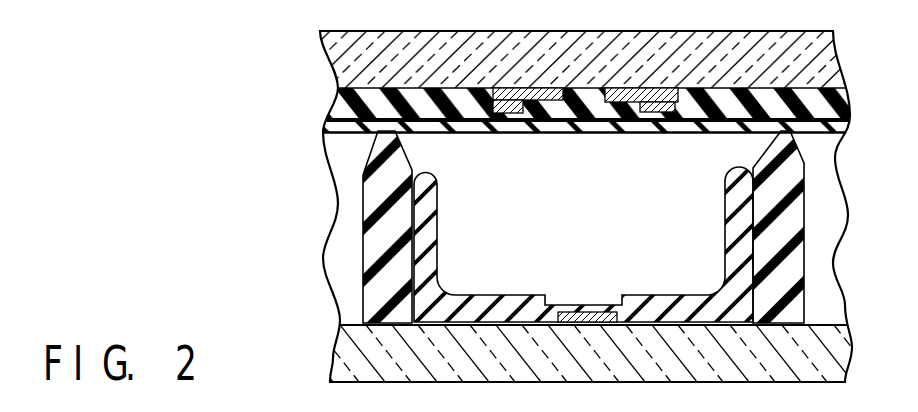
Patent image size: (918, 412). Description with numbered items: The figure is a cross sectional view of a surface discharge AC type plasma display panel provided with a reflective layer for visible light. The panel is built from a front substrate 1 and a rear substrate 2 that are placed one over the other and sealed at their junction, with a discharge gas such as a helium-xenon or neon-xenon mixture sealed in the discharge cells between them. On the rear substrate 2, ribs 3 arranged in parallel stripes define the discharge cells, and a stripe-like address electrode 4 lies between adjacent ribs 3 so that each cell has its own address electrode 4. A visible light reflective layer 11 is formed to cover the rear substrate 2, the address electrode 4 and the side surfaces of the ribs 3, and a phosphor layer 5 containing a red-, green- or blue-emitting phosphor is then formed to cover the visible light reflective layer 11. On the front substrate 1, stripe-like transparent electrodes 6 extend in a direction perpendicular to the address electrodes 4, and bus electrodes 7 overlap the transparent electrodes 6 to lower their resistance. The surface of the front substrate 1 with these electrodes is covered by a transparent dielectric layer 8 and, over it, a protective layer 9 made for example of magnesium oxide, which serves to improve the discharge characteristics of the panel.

The front substrate 1 is at (340, 72).
The rear substrate 2 is at (335, 354).
The rib 3 is at (387, 165).
The address electrode 4 is at (578, 320).
The phosphor layer 5 is at (425, 246).
The transparent electrode 6 is at (546, 96).
The bus electrode 7 is at (503, 98).
The transparent dielectric layer 8 is at (338, 110).
The protective layer 9 is at (335, 127).
The visible light reflective layer 11 is at (750, 208).